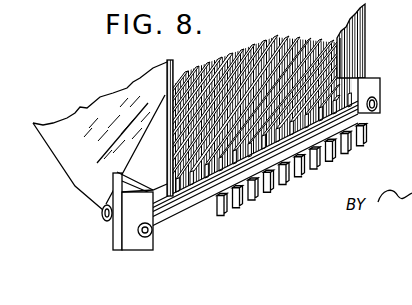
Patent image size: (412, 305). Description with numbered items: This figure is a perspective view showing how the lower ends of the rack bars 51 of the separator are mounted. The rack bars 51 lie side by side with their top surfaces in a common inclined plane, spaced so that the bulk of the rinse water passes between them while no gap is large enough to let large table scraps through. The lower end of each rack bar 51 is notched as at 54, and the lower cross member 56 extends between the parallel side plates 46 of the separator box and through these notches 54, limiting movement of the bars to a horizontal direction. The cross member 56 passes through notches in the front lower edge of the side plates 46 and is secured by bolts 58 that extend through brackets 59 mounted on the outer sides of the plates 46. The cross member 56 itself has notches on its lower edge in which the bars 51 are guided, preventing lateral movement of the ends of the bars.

The side plates 46 is at (75, 118).
The rack bars 51 is at (265, 192).
The notch 54 is at (227, 210).
The lower cross member 56 is at (138, 248).
The bolts 58 is at (103, 212).
The brackets 59 is at (113, 224).